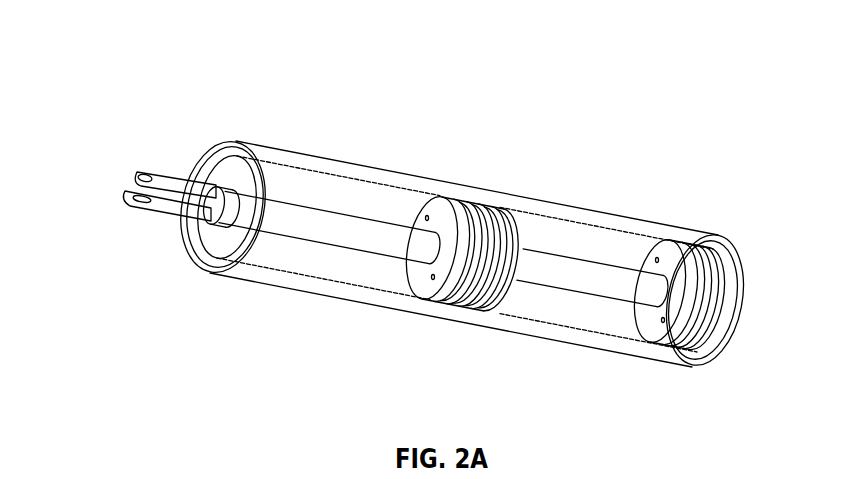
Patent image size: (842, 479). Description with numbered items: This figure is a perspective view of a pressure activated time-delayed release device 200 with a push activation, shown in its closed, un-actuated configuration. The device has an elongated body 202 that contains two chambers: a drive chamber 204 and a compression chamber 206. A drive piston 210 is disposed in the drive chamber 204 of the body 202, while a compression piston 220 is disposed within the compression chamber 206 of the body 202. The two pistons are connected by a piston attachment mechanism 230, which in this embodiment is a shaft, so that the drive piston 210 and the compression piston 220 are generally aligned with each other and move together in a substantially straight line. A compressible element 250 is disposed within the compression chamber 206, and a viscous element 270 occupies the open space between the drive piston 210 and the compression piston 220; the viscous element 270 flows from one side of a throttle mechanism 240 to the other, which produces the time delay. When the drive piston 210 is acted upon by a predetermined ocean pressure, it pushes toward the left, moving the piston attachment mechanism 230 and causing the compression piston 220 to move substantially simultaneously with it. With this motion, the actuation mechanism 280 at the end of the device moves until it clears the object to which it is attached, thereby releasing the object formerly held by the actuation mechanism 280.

The pressure activated time-delayed release device 200 is at (123, 64).
The body 202 is at (305, 293).
The drive chamber 204 is at (563, 242).
The compression chamber 206 is at (330, 193).
The drive piston 210 is at (681, 240).
The compression piston 220 is at (448, 196).
The piston attachment mechanism 230 is at (610, 293).
The throttle mechanism 240 is at (507, 206).
The compressible element 250 is at (320, 242).
The viscous element 270 is at (563, 309).
The actuation mechanism 280 is at (177, 176).